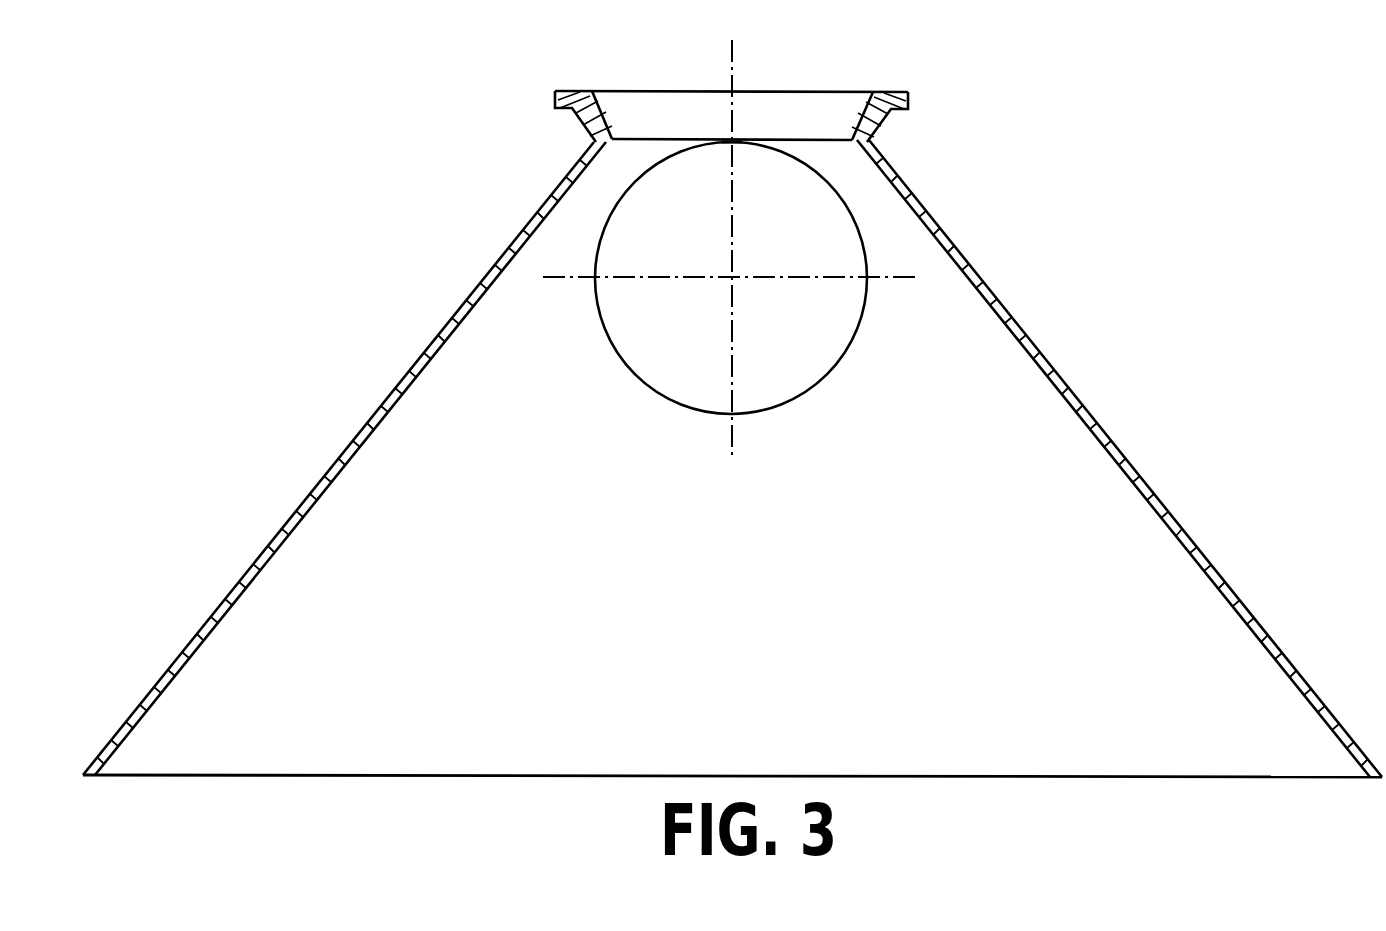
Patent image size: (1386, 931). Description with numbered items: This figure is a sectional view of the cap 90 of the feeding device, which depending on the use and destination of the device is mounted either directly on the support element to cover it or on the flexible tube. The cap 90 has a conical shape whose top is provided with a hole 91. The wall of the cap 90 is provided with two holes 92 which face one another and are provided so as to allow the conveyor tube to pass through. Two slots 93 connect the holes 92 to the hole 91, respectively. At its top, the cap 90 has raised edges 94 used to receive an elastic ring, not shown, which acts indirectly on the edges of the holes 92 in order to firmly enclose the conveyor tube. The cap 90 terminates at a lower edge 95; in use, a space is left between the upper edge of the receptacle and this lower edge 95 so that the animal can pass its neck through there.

The cap 90 is at (1042, 362).
The hole 91 is at (750, 110).
The holes 92 is at (823, 380).
The slots 93 is at (740, 145).
The raised edges 94 is at (878, 142).
The lower edge 95 is at (360, 775).